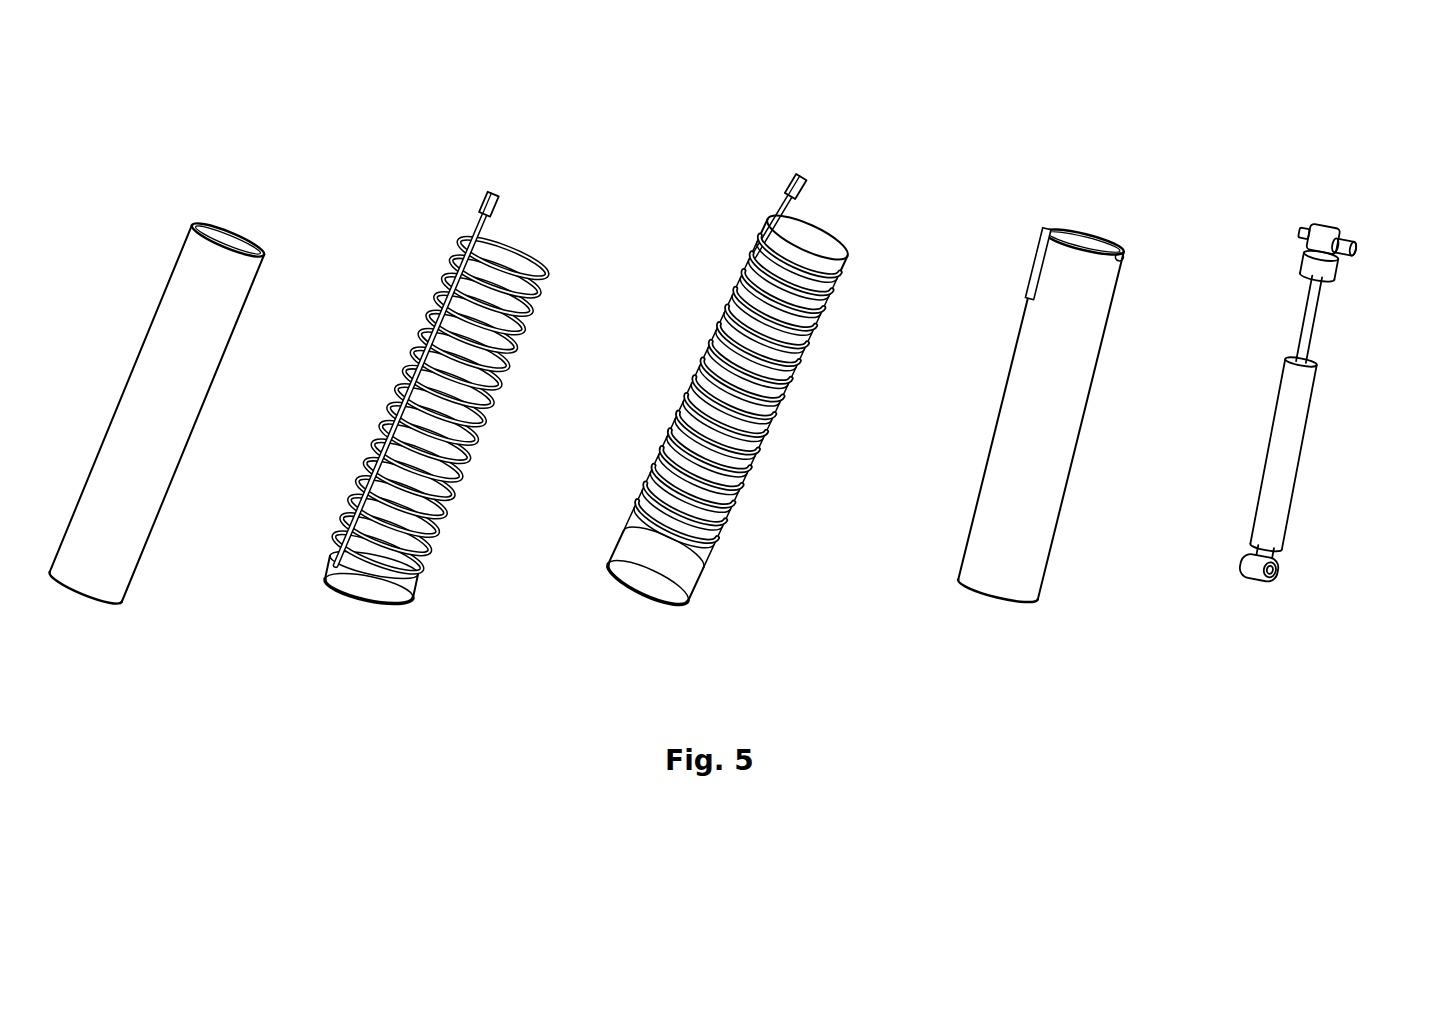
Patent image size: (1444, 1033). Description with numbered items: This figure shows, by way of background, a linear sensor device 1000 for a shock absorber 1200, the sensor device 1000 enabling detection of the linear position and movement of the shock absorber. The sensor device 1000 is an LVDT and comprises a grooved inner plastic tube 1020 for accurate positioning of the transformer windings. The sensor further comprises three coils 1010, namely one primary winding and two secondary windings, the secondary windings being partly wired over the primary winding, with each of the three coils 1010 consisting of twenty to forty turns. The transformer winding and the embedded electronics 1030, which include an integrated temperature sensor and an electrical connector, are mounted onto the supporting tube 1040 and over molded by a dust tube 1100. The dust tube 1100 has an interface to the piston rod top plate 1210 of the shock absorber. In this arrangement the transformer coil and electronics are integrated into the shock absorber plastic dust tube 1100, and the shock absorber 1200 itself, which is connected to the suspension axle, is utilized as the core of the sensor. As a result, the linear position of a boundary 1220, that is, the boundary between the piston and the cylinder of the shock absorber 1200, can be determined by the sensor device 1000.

The linear sensor device 1000 is at (836, 230).
The coils 1010 is at (523, 343).
The grooved inner plastic tube 1020 is at (185, 262).
The embedded electronics 1030 is at (493, 200).
The supporting tube 1040 is at (702, 563).
The dust tube 1100 is at (1027, 393).
The shock absorber 1200 is at (1316, 463).
The piston rod top plate 1210 is at (1283, 251).
The boundary 1220 is at (1318, 366).